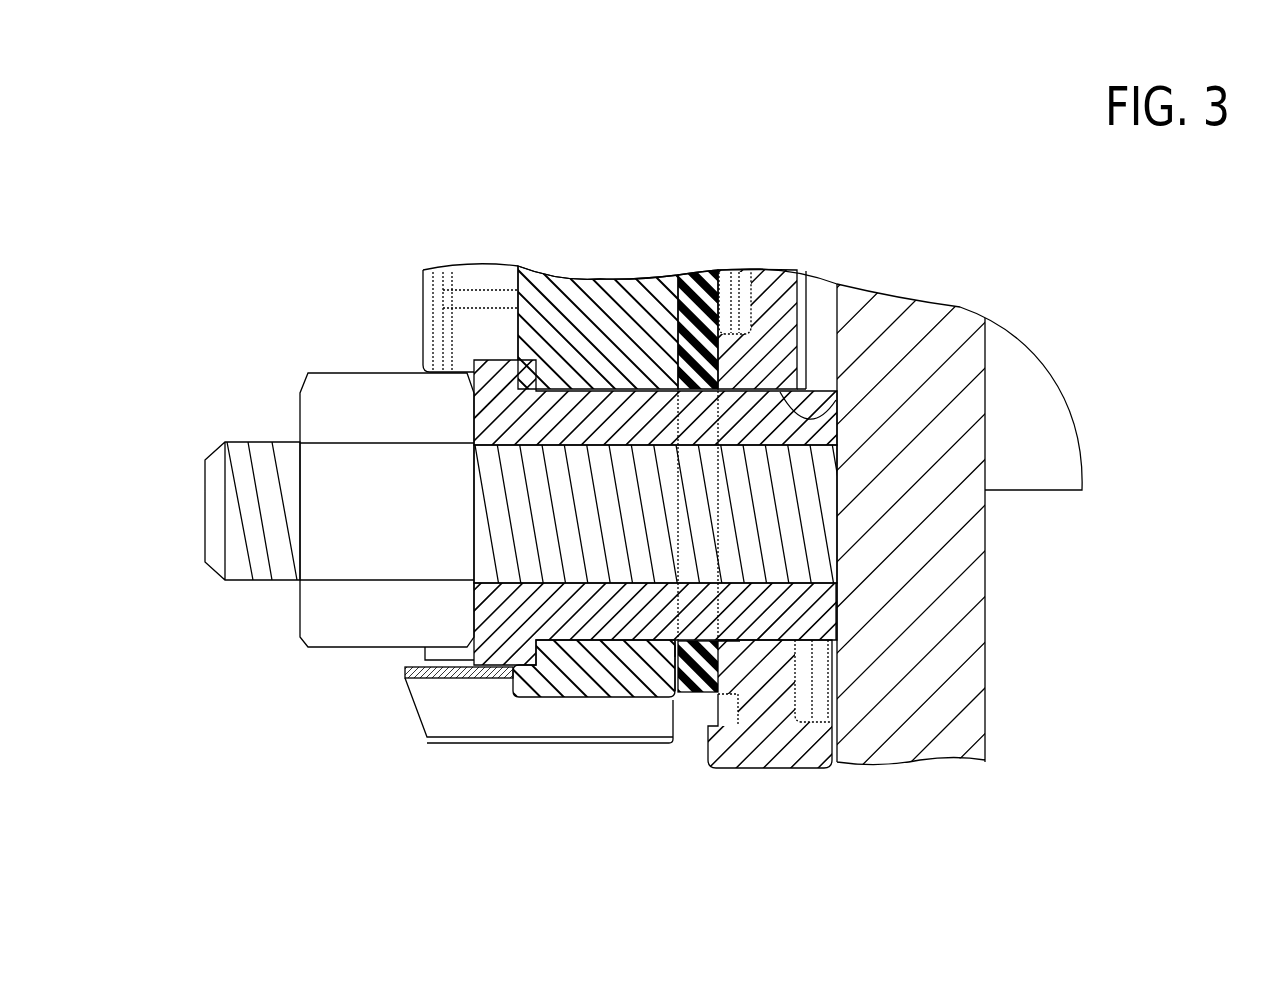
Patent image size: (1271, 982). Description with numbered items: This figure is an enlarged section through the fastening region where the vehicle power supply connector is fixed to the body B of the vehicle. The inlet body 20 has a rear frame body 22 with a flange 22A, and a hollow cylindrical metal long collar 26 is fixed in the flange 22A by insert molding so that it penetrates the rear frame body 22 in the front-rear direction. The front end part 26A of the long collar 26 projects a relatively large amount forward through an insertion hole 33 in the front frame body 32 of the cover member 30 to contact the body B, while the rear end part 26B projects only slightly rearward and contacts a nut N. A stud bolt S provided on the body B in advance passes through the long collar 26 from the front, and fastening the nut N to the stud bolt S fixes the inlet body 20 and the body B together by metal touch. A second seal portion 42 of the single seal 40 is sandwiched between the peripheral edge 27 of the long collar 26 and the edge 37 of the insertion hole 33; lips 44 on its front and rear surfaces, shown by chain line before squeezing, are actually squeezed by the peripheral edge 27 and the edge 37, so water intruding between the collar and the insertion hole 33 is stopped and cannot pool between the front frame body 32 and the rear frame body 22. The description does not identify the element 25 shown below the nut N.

The inlet body 20 is at (503, 282).
The rear frame body 22 is at (606, 305).
The flange 22A is at (562, 673).
The cap 25 is at (458, 720).
The long collar 26 is at (466, 558).
The front end part 26A is at (840, 615).
The rear end part 26B is at (453, 613).
The peripheral edge 27 is at (660, 673).
The cover member 30 is at (814, 290).
The front frame body 32 is at (778, 300).
The insertion hole 33 is at (838, 402).
The edge of insertion hole 37 is at (717, 659).
The seal 40 is at (697, 290).
The second seal portion 42 is at (695, 692).
The lip 44 is at (673, 657).
The body B is at (965, 548).
The nut N is at (318, 625).
The stud bolt S is at (262, 560).